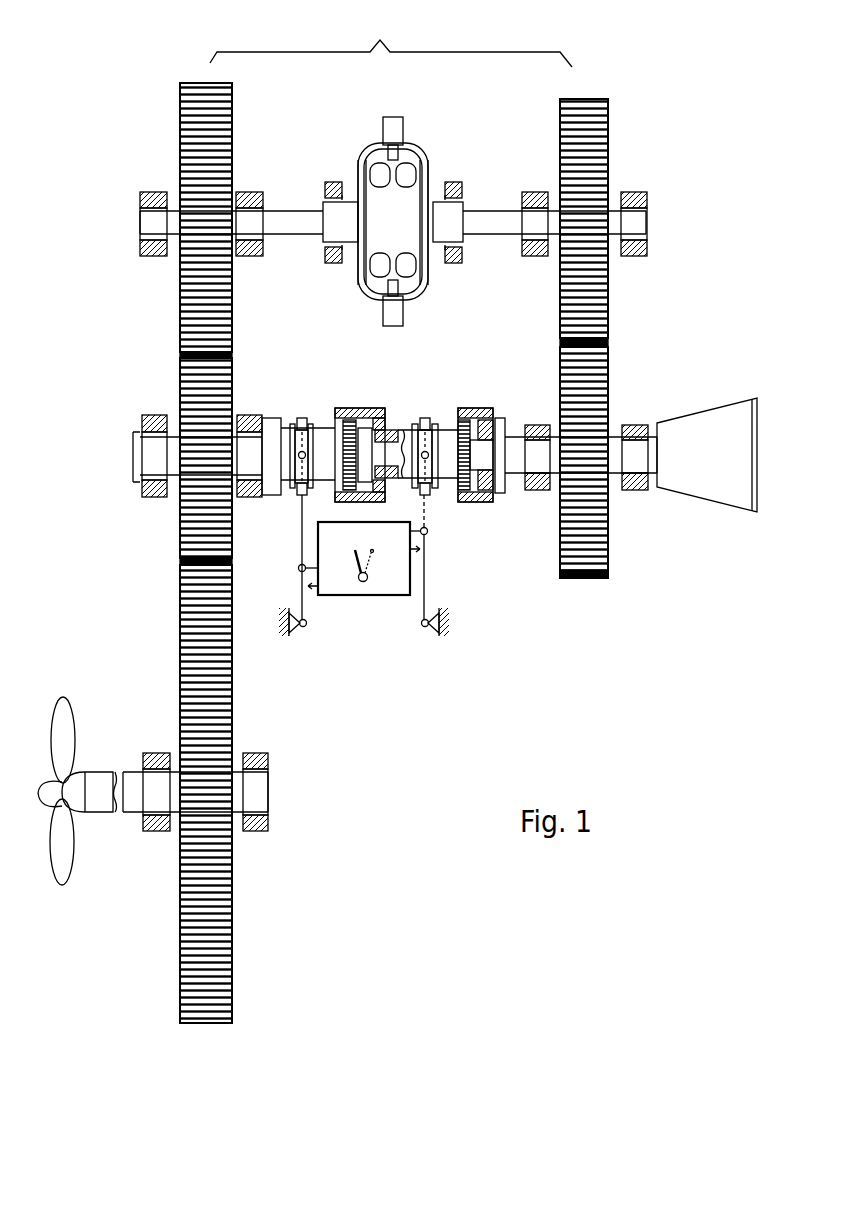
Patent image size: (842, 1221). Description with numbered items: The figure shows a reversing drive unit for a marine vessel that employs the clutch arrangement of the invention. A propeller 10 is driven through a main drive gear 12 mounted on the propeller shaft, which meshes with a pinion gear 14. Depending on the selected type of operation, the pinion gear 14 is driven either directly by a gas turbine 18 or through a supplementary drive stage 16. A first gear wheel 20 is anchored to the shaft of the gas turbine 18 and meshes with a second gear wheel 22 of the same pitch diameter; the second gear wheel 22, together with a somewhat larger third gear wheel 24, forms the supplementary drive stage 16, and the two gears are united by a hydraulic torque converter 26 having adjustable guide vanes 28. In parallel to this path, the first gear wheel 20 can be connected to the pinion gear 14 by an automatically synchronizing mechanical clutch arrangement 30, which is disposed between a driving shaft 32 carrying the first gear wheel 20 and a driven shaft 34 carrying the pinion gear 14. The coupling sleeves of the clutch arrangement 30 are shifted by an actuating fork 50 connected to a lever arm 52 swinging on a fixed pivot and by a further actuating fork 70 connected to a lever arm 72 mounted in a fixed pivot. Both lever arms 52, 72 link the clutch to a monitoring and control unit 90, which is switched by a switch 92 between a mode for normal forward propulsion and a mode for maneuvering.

The propeller 10 is at (75, 797).
The main drive gear 12 is at (188, 672).
The pinion gear 14 is at (187, 525).
The supplementary drive stage 16 is at (391, 41).
The gas turbine 18 is at (710, 485).
The first gear wheel 20 is at (598, 395).
The second gear wheel 22 is at (598, 298).
The third gear wheel 24 is at (185, 300).
The hydraulic torque converter 26 is at (348, 150).
The adjustable guide vanes 28 is at (398, 128).
The clutch arrangement 30 is at (402, 390).
The driving shaft 32 is at (512, 438).
The driven shaft 34 is at (272, 420).
The actuating fork 50 is at (302, 418).
The lever arm 52 is at (428, 578).
The further actuating fork 70 is at (428, 418).
The lever arm 72 is at (300, 549).
The monitoring and control unit 90 is at (347, 612).
The switch 92 is at (367, 582).